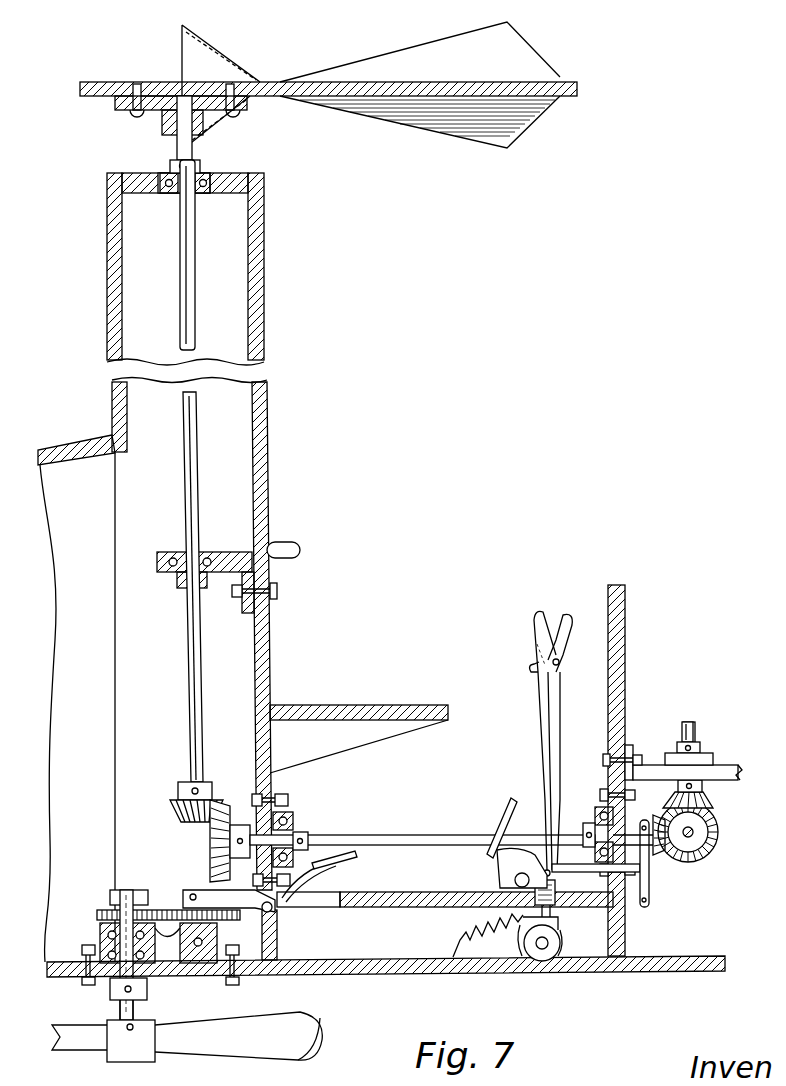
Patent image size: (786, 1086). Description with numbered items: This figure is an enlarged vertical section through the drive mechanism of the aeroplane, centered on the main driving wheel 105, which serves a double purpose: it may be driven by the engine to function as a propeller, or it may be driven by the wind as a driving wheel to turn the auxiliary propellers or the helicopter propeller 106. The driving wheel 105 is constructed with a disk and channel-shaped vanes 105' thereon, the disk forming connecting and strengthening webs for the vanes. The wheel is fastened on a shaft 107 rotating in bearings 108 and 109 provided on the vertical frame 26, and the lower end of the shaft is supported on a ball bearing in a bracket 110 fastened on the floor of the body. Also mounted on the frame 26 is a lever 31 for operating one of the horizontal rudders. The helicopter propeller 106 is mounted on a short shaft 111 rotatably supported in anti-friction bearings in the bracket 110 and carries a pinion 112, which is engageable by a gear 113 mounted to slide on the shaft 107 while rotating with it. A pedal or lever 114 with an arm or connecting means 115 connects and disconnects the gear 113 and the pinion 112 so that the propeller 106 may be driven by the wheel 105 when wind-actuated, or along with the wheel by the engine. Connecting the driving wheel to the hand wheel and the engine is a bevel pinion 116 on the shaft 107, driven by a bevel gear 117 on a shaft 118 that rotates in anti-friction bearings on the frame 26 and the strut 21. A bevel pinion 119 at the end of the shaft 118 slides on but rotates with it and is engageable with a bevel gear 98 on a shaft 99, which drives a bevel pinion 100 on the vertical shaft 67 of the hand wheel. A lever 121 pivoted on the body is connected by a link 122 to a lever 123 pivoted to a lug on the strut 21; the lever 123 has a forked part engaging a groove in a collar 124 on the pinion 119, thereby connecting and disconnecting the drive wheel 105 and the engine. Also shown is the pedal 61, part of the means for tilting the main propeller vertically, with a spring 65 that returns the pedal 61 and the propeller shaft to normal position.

The main driving wheel 105 is at (328, 87).
The channel-shaped vanes 105' is at (420, 96).
The bearing 108 is at (205, 194).
The shaft 107 is at (186, 302).
The vertical frame 26 is at (265, 292).
The bearing 109 is at (210, 550).
The lever 31 is at (288, 545).
The strut 21 is at (623, 675).
The lever 121 is at (558, 728).
The collar 124 is at (645, 785).
The vertical shaft 67 is at (697, 733).
The bevel pinion 119 is at (638, 822).
The bevel pinion 100 is at (705, 795).
The shaft 99 is at (709, 831).
The bevel gear 98 is at (712, 858).
The pedal 61 is at (510, 820).
The shaft 118 is at (377, 835).
The bevel gear 117 is at (232, 805).
The bevel pinion 116 is at (172, 810).
The pedal or lever 114 is at (335, 870).
The gear 113 is at (167, 908).
The pinion 112 is at (97, 908).
The arm or connecting means 115 is at (257, 905).
The bracket 110 is at (187, 980).
The short shaft 111 is at (122, 1008).
The helicopter propeller 106 is at (297, 1028).
The spring 65 is at (480, 936).
The link 122 is at (585, 874).
The lever 123 is at (649, 885).